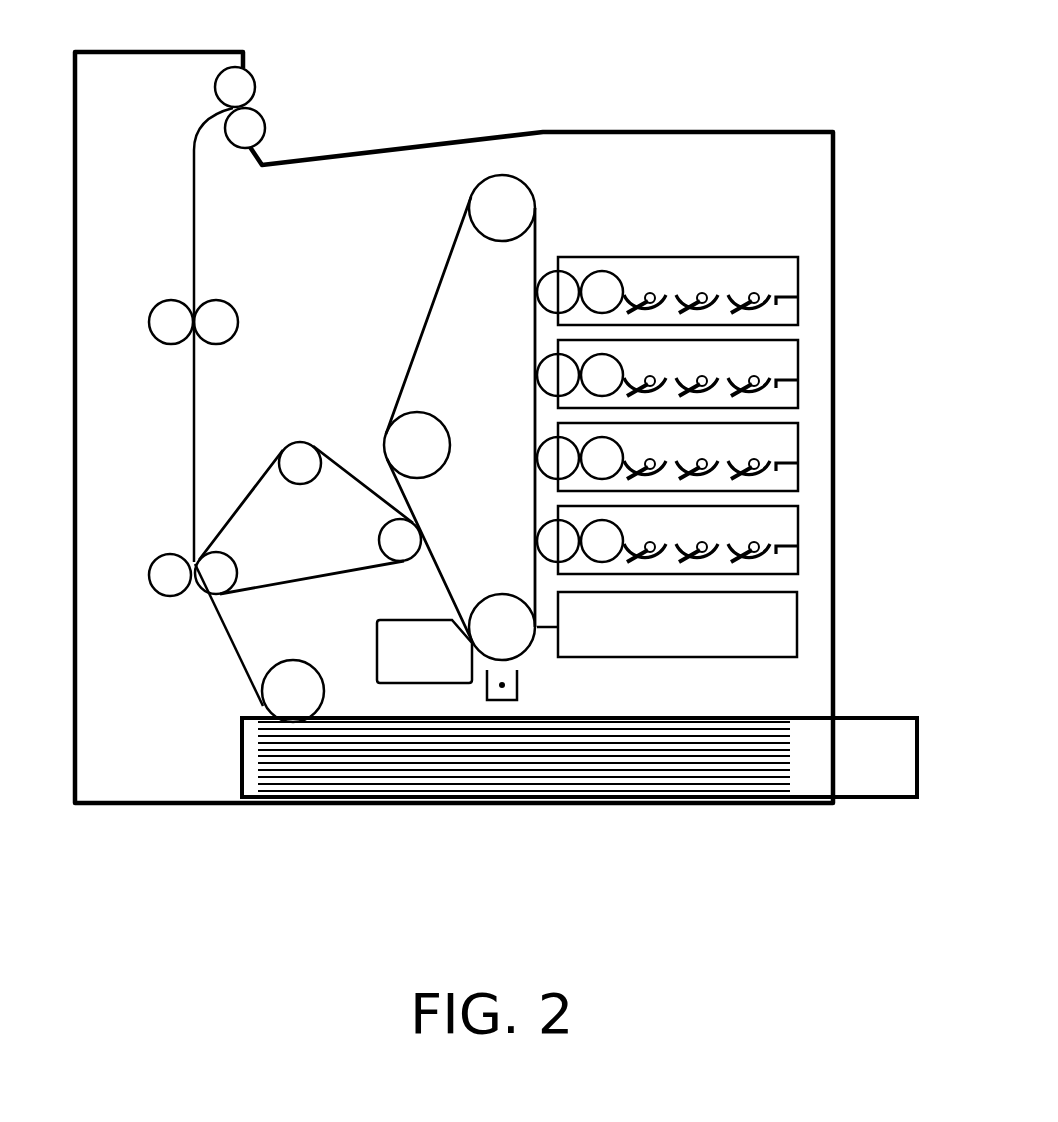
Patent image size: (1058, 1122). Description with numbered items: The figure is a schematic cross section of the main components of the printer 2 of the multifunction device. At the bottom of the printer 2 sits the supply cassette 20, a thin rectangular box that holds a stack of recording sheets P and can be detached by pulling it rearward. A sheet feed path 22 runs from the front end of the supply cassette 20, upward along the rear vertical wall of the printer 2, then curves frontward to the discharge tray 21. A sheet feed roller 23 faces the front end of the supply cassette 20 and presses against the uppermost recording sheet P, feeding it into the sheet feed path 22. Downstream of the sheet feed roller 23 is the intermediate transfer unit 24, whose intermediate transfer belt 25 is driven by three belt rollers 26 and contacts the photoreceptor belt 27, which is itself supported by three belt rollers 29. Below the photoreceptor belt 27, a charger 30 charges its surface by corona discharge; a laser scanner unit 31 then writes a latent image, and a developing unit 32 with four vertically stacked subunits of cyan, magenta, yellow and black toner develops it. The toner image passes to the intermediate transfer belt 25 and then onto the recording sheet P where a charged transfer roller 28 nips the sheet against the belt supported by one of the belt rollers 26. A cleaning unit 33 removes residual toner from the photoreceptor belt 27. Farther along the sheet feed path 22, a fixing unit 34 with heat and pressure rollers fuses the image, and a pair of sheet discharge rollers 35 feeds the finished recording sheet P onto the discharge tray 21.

The printer 2 is at (204, 848).
The supply cassette 20 is at (896, 717).
The discharge tray 21 is at (436, 143).
The sheet feed path 22 is at (194, 455).
The sheet feed roller 23 is at (291, 660).
The intermediate transfer unit 24 is at (268, 422).
The intermediate transfer belt 25 is at (340, 466).
The belt rollers 26 is at (312, 478).
The photoreceptor belt 27 is at (430, 312).
The transfer roller 28 is at (150, 575).
The belt rollers 29 is at (524, 198).
The charger 30 is at (517, 690).
The laser scanner unit 31 is at (775, 659).
The developing unit 32 is at (760, 238).
The cleaning unit 33 is at (377, 648).
The fixing unit 34 is at (165, 286).
The sheet discharge rollers 35 is at (266, 120).
The recording sheet P is at (692, 728).